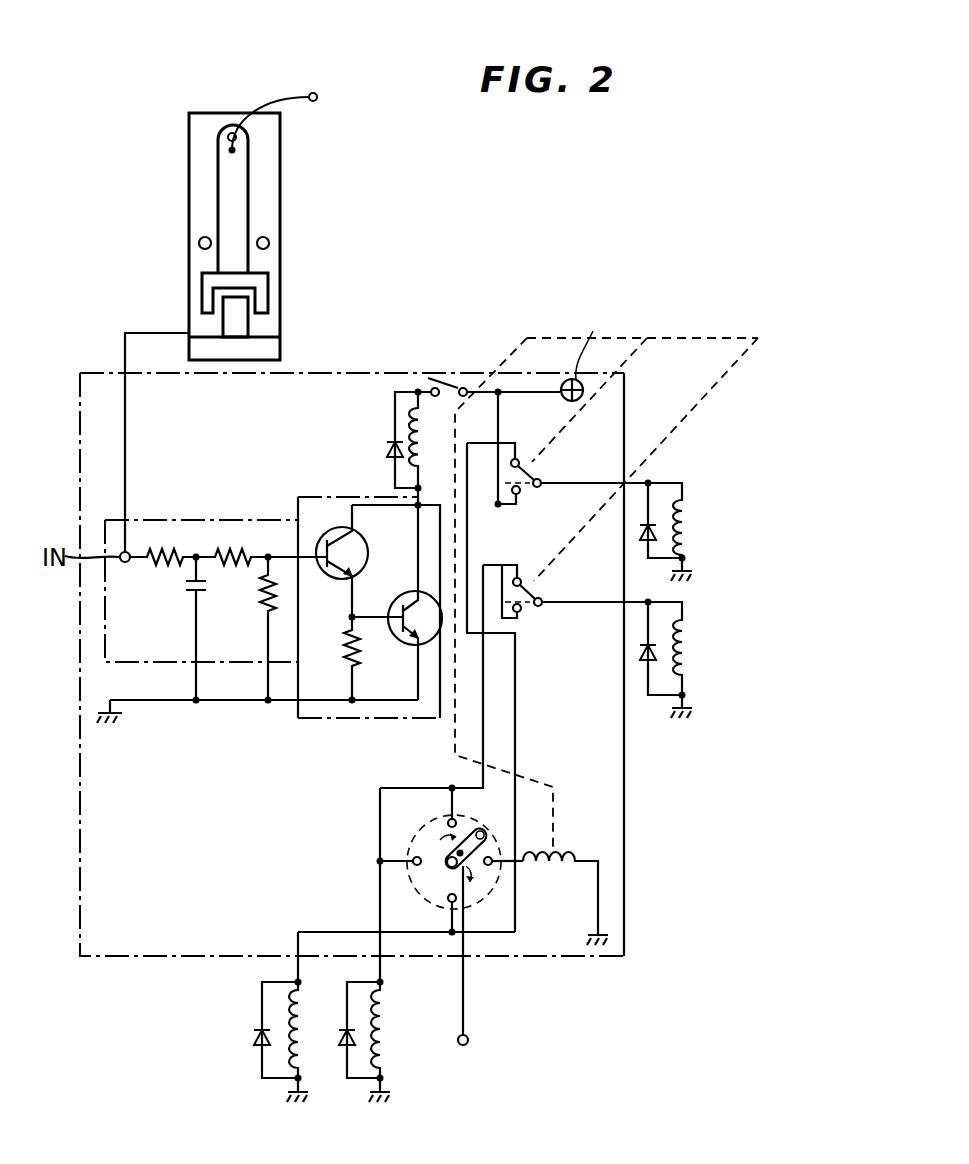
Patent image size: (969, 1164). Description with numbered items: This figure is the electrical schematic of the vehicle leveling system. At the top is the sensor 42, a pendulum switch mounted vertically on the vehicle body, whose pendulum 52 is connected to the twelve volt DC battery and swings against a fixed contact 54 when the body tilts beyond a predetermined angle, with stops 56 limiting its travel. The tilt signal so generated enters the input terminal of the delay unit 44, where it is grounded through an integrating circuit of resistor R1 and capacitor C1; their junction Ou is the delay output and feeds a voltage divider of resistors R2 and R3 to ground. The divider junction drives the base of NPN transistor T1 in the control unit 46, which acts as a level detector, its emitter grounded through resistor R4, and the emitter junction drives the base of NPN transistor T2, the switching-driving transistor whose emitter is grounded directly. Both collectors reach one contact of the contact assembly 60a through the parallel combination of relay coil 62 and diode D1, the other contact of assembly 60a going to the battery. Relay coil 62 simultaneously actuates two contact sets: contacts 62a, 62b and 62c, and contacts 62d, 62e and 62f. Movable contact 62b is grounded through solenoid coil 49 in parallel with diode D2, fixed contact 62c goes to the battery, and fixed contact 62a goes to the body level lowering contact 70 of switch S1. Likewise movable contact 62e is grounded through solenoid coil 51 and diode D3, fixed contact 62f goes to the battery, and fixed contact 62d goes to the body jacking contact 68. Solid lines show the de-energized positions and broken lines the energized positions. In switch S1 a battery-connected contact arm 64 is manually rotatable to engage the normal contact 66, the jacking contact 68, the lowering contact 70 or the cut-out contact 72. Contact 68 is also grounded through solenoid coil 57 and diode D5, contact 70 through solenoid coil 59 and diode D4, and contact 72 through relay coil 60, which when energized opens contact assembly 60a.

The sensor 42 is at (286, 142).
The delay unit 44 is at (105, 622).
The control unit 46 is at (345, 719).
The solenoid coil 49 is at (684, 517).
The solenoid coil 51 is at (684, 653).
The pendulum 52 is at (218, 176).
The fixed contact 54 is at (232, 322).
The stops 56 is at (199, 241).
The solenoid coil 57 is at (385, 1034).
The solenoid coil 59 is at (304, 1013).
The relay coil 60 is at (558, 854).
The contact assembly 60a is at (448, 386).
The relay coil 62 is at (410, 422).
The contact 62a is at (516, 458).
The contact 62b is at (536, 469).
The contact 62c is at (519, 492).
The contact 62d is at (519, 578).
The contact 62e is at (536, 599).
The contact 62f is at (520, 612).
The contact arm 64 is at (483, 831).
The normal contact 66 is at (413, 859).
The body jacking contact 68 is at (447, 821).
The body level lowering contact 70 is at (448, 900).
The cut-out contact 72 is at (493, 866).
The resistor R1 is at (158, 547).
The resistor R2 is at (233, 548).
The resistor R3 is at (262, 600).
The resistor R4 is at (348, 666).
The capacitor C1 is at (188, 588).
The diode D1 is at (386, 452).
The diode D2 is at (649, 543).
The diode D3 is at (649, 670).
The diode D4 is at (254, 1034).
The diode D5 is at (341, 1044).
The NPN transistor T1 is at (339, 533).
The NPN transistor T2 is at (410, 597).
The switch S1 is at (458, 873).
The junction Ou is at (196, 547).